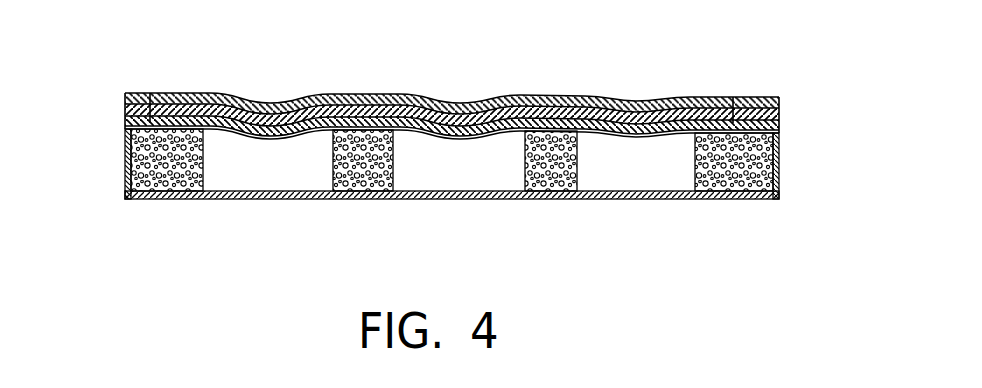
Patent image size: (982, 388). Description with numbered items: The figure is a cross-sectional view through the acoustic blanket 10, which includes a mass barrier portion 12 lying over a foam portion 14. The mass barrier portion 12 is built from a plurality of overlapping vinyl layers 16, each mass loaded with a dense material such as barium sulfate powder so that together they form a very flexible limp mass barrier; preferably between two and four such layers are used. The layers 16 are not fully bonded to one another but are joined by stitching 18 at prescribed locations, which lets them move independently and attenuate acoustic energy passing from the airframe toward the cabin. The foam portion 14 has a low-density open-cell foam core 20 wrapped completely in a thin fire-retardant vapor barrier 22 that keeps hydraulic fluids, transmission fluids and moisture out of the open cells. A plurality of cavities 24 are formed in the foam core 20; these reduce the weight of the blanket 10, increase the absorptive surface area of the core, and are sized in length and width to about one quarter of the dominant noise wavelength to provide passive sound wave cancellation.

The acoustic blanket 10 is at (484, 147).
The mass barrier portion 12 is at (500, 112).
The foam portion 14 is at (452, 207).
The vinyl layers 16 is at (780, 107).
The stitching 18 is at (150, 93).
The foam core 20 is at (745, 172).
The vapor barrier 22 is at (228, 199).
The cavities 24 is at (303, 180).